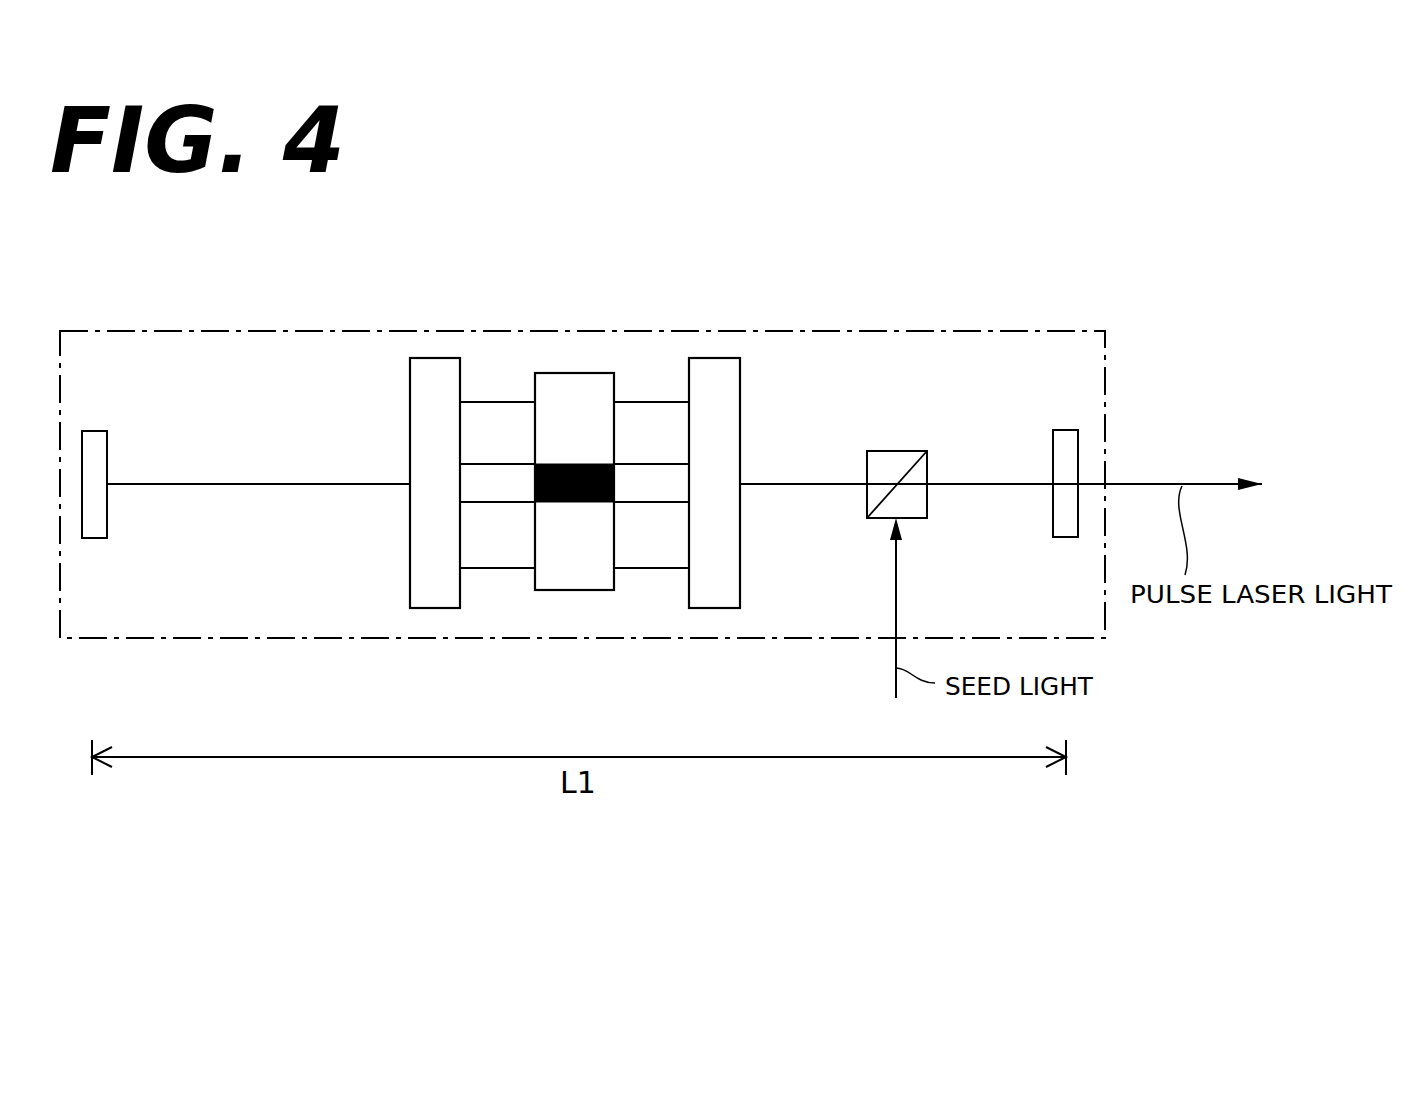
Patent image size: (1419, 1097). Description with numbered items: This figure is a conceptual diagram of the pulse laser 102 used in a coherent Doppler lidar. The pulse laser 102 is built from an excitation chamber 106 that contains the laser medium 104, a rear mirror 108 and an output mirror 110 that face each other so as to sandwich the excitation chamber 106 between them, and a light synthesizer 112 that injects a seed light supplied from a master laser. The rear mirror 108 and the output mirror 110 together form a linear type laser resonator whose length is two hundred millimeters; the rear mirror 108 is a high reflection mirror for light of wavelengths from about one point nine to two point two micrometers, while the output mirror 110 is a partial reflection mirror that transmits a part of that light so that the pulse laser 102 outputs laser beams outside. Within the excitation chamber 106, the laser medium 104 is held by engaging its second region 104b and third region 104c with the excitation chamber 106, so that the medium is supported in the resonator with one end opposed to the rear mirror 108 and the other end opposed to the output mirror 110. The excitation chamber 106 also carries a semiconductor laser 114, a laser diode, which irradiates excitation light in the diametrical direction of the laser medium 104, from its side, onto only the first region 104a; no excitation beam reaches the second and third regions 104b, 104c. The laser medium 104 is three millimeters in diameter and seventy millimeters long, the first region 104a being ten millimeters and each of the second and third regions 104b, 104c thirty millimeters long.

The pulse laser 102 is at (978, 330).
The laser medium 104 is at (587, 482).
The first region 104a is at (585, 465).
The second region 104b is at (498, 472).
The third region 104c is at (668, 478).
The excitation chamber 106 is at (638, 392).
The rear mirror 108 is at (93, 441).
The output mirror 110 is at (1068, 440).
The light synthesizer 112 is at (893, 451).
The semiconductor laser 114 is at (560, 393).